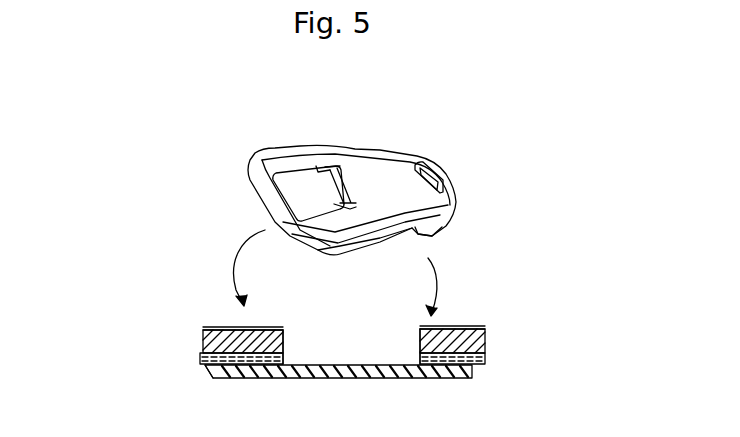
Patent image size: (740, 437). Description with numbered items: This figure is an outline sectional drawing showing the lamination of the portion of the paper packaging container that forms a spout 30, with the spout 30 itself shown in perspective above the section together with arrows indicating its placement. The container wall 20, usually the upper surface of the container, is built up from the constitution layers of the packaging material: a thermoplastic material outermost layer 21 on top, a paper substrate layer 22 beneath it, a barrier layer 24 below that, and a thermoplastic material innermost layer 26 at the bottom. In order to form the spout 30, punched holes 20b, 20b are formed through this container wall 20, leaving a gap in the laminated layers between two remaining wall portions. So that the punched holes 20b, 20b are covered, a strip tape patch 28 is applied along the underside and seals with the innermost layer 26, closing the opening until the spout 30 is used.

The spout 30 is at (453, 202).
The trim panel 20 is at (212, 365).
The punched holes 20b is at (285, 345).
The thermoplastic material outermost layer 21 is at (477, 328).
The paper substrate layer 22 is at (477, 344).
The barrier layer 24 is at (480, 359).
The thermoplastic material innermost layer 26 is at (476, 372).
The strip tape patch 28 is at (391, 376).